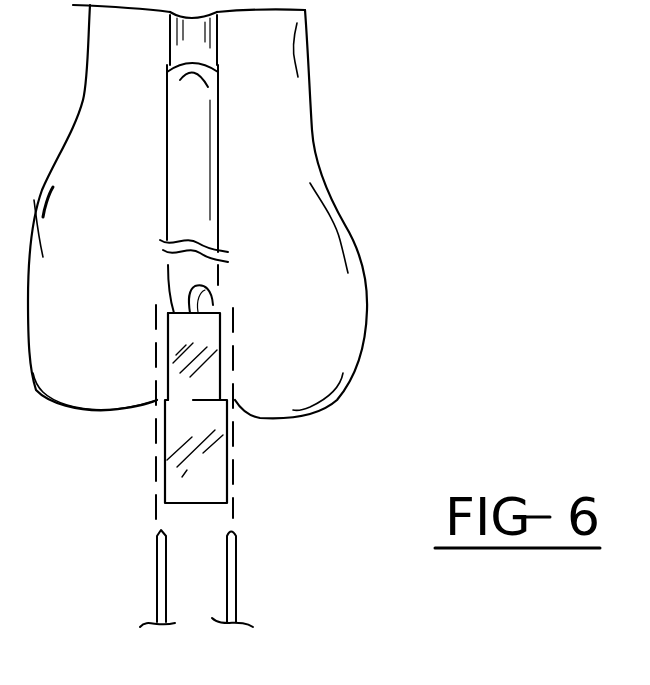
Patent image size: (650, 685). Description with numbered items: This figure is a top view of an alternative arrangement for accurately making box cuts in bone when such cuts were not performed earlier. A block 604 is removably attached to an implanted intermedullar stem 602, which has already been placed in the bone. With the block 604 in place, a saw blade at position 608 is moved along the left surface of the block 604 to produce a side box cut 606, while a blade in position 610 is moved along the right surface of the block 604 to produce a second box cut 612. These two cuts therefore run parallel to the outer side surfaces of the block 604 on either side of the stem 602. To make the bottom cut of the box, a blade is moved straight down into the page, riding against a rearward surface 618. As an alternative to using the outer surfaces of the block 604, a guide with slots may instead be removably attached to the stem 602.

The implanted intermedullar stem 602 is at (198, 173).
The block 604 is at (180, 431).
The side box cut 606 is at (157, 383).
The saw blade position 608 is at (158, 563).
The blade position 610 is at (232, 572).
The box cut 612 is at (233, 362).
The rearward surface 618 is at (215, 288).